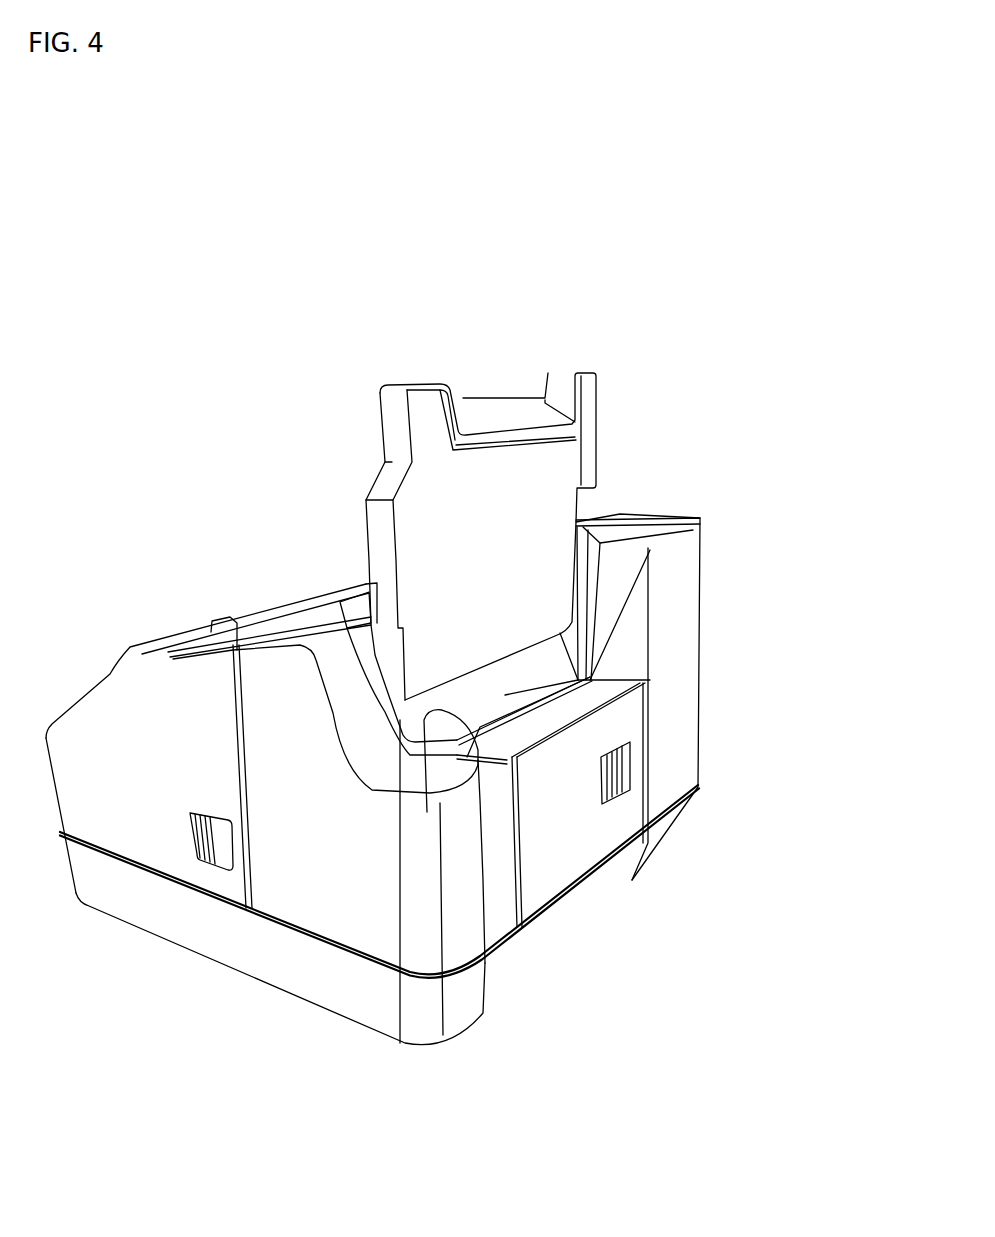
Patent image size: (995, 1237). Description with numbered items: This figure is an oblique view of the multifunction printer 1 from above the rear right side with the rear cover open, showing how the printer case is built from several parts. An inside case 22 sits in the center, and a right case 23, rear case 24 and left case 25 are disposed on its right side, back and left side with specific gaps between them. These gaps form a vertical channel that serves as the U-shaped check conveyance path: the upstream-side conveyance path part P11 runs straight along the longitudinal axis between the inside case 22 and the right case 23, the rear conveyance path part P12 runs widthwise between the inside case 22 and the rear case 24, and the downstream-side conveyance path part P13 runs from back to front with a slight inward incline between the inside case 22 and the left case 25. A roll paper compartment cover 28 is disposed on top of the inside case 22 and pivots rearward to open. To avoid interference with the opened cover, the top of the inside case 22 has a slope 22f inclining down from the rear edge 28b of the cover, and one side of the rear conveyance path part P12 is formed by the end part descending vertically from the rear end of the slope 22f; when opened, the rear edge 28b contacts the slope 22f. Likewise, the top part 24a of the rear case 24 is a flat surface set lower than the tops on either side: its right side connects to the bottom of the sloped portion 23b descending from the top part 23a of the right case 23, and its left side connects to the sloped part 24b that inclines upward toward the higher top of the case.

The multifunction printer 1 is at (668, 304).
The inside case 22 is at (291, 590).
The slope 22f is at (493, 963).
The right case 23 is at (360, 703).
The top part 23a is at (246, 608).
The sloped portion 23b is at (310, 889).
The rear case 24 is at (662, 517).
The top part 24a is at (600, 712).
The sloped part 24b is at (620, 580).
The left case 25 is at (612, 512).
The roll paper compartment cover 28 is at (476, 392).
The rear edge 28b is at (400, 1043).
The upstream-side conveyance path part P11 is at (400, 747).
The rear conveyance path part P12 is at (547, 723).
The downstream-side conveyance path part P13 is at (590, 612).